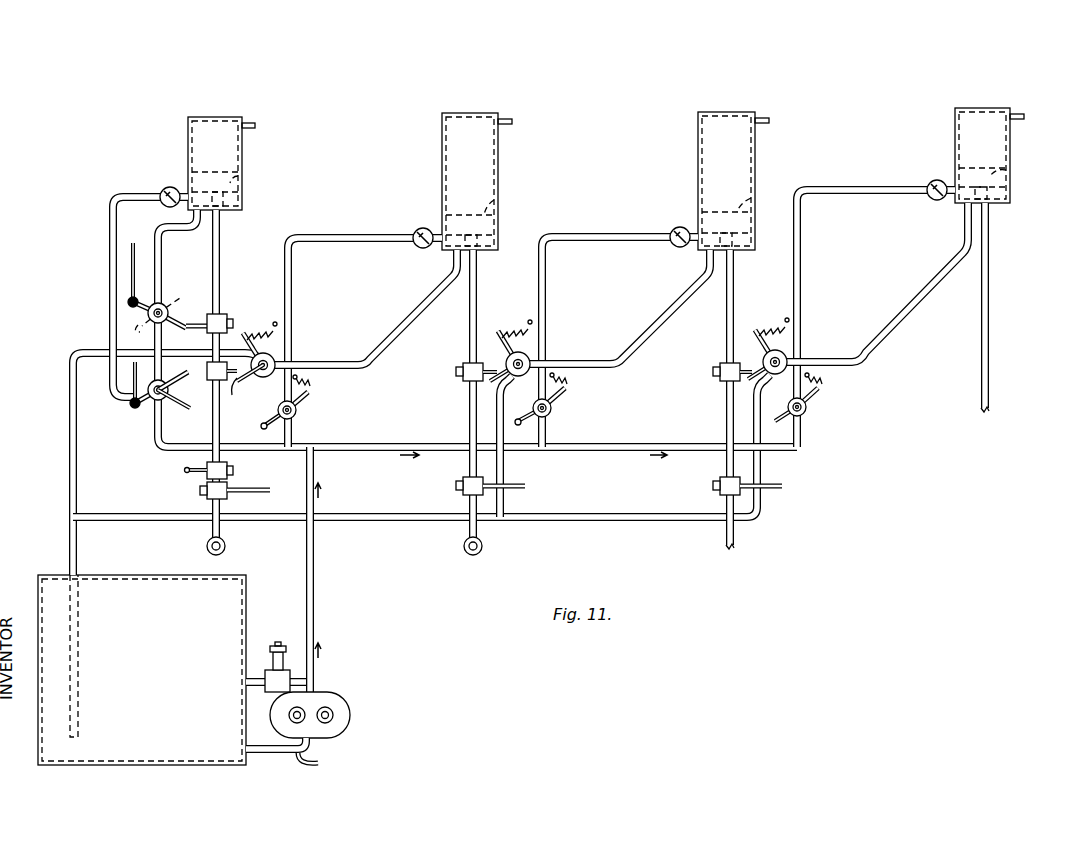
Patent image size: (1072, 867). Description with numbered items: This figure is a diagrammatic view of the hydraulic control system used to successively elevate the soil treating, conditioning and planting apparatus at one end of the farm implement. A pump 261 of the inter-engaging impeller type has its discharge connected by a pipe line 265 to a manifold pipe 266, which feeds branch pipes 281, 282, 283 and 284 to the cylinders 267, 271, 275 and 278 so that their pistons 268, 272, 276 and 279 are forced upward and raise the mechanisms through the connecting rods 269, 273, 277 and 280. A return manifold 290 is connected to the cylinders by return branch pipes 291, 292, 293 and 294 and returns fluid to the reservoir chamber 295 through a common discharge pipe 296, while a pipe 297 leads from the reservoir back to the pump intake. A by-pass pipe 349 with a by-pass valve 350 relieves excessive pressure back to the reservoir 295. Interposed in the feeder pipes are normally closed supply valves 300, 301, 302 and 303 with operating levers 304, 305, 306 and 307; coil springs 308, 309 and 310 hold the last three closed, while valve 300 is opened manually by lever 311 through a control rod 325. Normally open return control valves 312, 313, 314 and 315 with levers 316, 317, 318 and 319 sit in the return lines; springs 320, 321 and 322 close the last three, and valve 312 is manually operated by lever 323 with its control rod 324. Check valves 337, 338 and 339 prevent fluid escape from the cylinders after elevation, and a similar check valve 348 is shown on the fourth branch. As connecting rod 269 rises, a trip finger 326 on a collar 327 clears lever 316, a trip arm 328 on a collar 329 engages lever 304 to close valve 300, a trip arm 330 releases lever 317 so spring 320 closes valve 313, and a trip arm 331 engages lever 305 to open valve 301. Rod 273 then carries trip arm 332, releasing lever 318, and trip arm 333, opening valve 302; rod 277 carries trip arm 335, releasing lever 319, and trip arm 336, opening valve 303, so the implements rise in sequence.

The pump 261 is at (338, 700).
The pipe line 265 is at (314, 581).
The manifold pipe 266 is at (405, 442).
The cylinder 267 is at (243, 174).
The piston 268 is at (243, 178).
The connecting rod 269 is at (220, 238).
The cylinder 271 is at (498, 156).
The piston 272 is at (498, 196).
The connecting rod 273 is at (478, 288).
The cylinder 275 is at (755, 152).
The piston 276 is at (756, 196).
The connecting rod 277 is at (734, 286).
The cylinder 278 is at (1010, 154).
The piston 279 is at (1010, 175).
The connecting rod 280 is at (990, 292).
The branch pipe 281 is at (113, 232).
The branch pipe 282 is at (355, 238).
The branch pipe 283 is at (620, 237).
The branch pipe 284 is at (886, 190).
The return manifold 290 is at (570, 528).
The branch pipe 291 is at (162, 258).
The branch pipe 292 is at (395, 333).
The branch pipe 293 is at (658, 333).
The branch pipe 294 is at (885, 345).
The reservoir chamber 295 is at (150, 578).
The common discharge pipe 296 is at (70, 565).
The pipe 297 is at (320, 764).
The valve 300 is at (160, 380).
The valve 301 is at (298, 412).
The valve 302 is at (553, 410).
The valve 303 is at (806, 411).
The operating lever 304 is at (178, 378).
The operating lever 305 is at (268, 428).
The operating lever 306 is at (522, 425).
The operating lever 307 is at (800, 448).
The coil spring 308 is at (307, 390).
The coil spring 309 is at (565, 388).
The coil spring 310 is at (820, 386).
The manually controlled operating lever 311 is at (133, 408).
The control valve 312 is at (183, 282).
The control valve 313 is at (292, 347).
The control valve 314 is at (532, 350).
The control valve 315 is at (788, 350).
The operating lever 316 is at (203, 325).
The operating lever 317 is at (241, 384).
The operating lever 318 is at (492, 385).
The operating lever 319 is at (750, 387).
The coil spring 320 is at (258, 305).
The coil spring 321 is at (511, 317).
The coil spring 322 is at (770, 314).
The manual operating lever 323 is at (138, 316).
The control rod 324 is at (130, 256).
The control rod 325 is at (115, 368).
The trip finger 326 is at (220, 314).
The collar 327 is at (210, 349).
The trip arm 328 is at (190, 476).
The collar 329 is at (228, 466).
The trip arm 330 is at (232, 398).
The trip arm 331 is at (252, 494).
The trip arm 332 is at (461, 363).
The trip arm 333 is at (513, 484).
The trip arm 335 is at (722, 363).
The trip arm 336 is at (770, 496).
The check valve 337 is at (168, 187).
The check valve 338 is at (420, 229).
The check valve 339 is at (677, 227).
The fourth shut-off valve 348 is at (935, 180).
The by-pass pipe 349 is at (272, 668).
The by-pass valve 350 is at (285, 652).